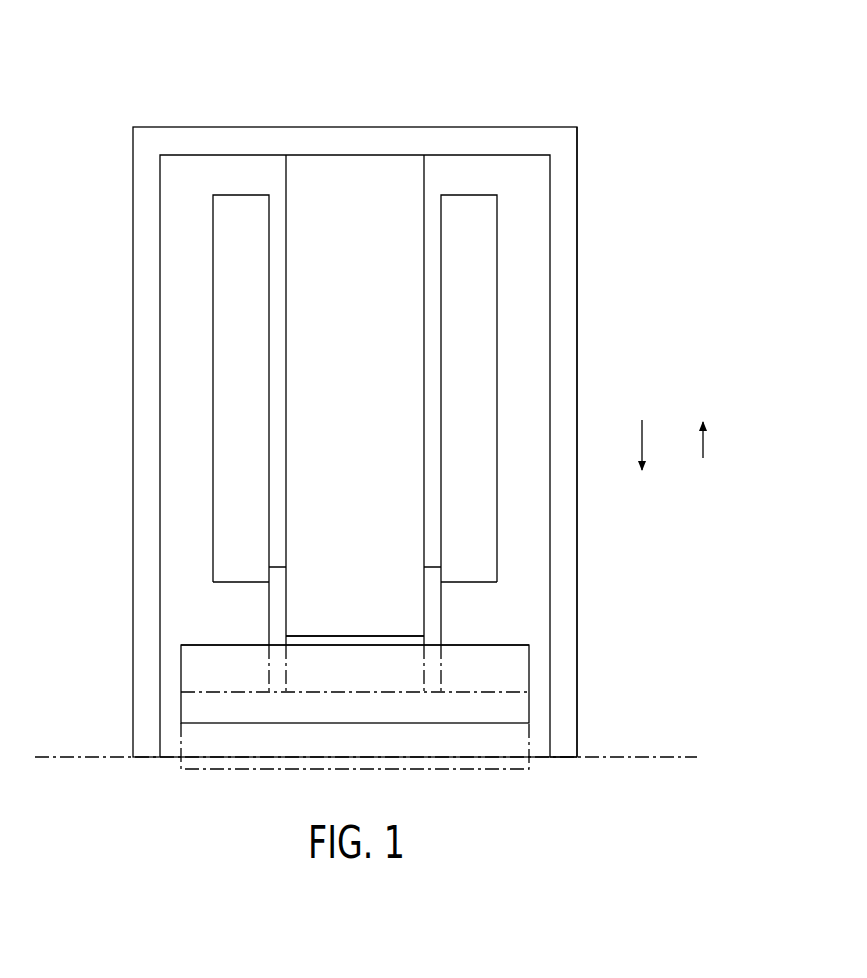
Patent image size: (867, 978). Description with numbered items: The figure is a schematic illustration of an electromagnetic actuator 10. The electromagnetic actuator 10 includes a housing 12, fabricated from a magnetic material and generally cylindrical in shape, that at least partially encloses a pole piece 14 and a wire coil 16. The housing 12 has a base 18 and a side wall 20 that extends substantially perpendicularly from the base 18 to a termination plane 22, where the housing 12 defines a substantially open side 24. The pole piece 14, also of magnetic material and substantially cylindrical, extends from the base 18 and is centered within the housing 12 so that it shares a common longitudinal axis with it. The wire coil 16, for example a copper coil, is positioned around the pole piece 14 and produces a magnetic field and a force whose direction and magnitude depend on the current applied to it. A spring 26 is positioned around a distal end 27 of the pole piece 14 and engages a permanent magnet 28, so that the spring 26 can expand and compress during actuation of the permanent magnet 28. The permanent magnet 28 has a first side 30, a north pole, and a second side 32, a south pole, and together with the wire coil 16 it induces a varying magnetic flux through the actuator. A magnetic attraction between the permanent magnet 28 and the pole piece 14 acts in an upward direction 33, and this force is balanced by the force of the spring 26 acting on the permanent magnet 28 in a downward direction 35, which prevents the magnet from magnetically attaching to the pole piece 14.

The electromagnetic actuator 10 is at (500, 44).
The housing 12 is at (116, 114).
The pole piece 14 is at (392, 172).
The wire coil 16 is at (497, 254).
The base 18 is at (354, 127).
The side wall 20 is at (577, 252).
The termination plane 22 is at (647, 757).
The open side 24 is at (563, 758).
The spring 26 is at (441, 603).
The distal end 27 is at (387, 642).
The permanent magnet 28 is at (213, 666).
The first side 30 is at (231, 645).
The second side 32 is at (225, 723).
The upward direction 33 is at (703, 450).
The downward direction 35 is at (642, 430).